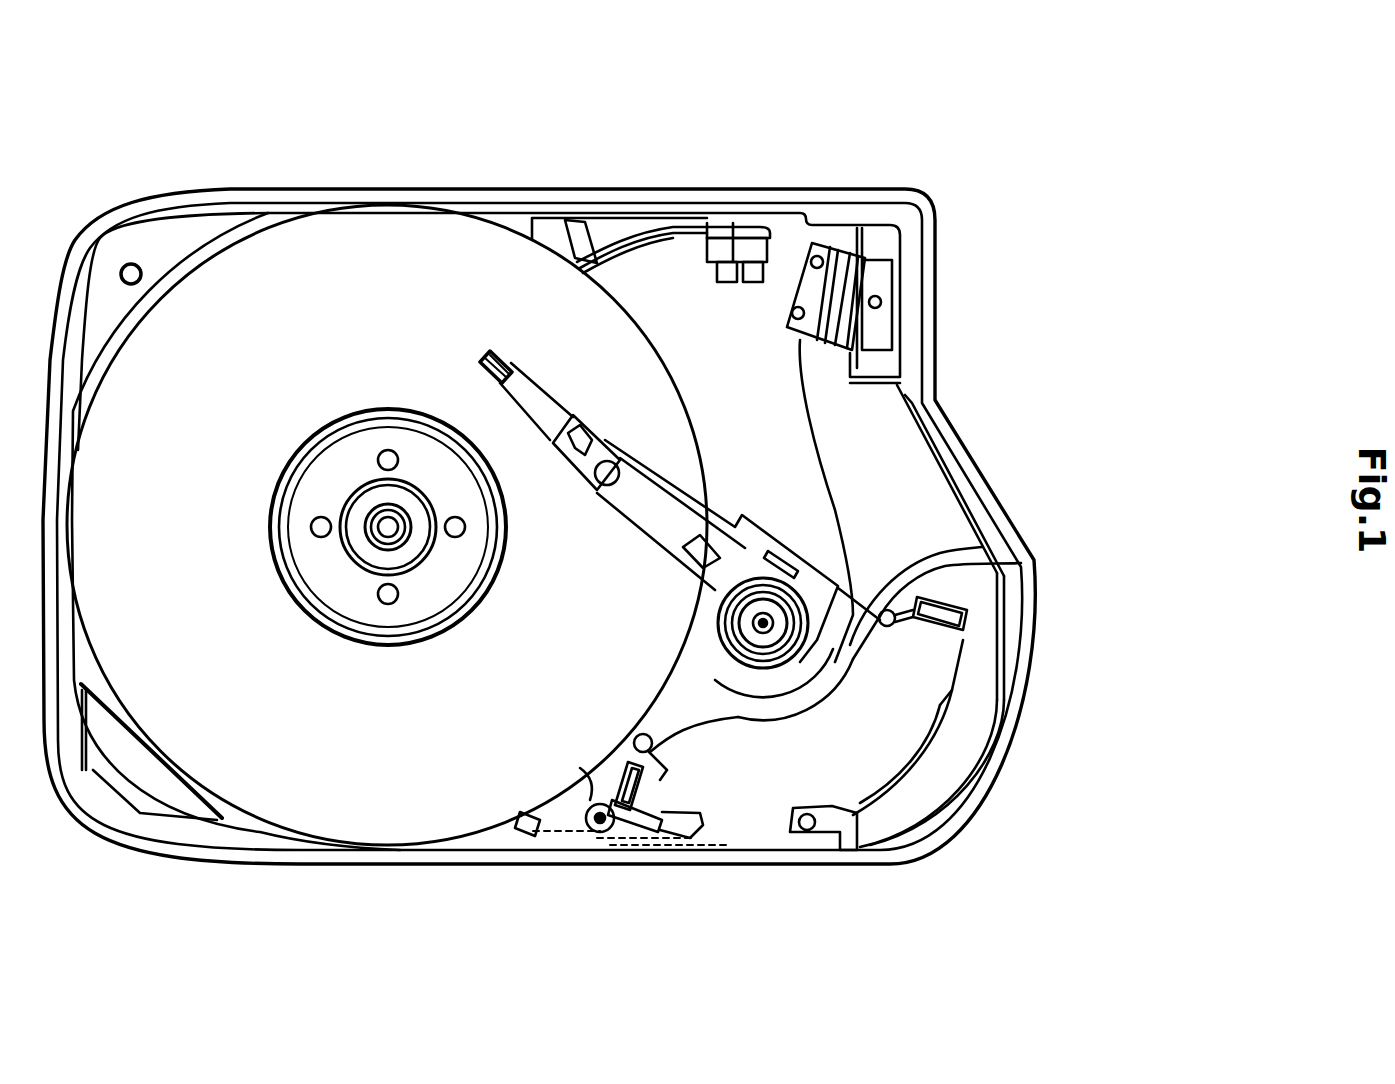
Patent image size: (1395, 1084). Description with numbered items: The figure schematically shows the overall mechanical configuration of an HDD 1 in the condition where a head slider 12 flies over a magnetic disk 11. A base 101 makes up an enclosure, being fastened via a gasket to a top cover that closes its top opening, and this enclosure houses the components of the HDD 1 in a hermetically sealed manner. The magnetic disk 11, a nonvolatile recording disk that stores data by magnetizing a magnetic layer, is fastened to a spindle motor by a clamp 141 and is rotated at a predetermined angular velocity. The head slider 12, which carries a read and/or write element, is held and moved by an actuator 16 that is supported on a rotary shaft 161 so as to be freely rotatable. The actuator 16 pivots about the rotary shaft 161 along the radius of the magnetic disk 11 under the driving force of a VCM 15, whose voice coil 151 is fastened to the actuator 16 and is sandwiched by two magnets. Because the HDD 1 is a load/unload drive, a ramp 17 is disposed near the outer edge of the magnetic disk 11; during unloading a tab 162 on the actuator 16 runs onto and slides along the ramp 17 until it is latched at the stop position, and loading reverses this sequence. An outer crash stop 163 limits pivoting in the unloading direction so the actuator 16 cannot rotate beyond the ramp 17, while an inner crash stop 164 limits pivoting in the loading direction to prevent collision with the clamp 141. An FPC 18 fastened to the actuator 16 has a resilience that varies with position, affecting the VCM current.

The HDD 1 is at (538, 152).
The base 101 is at (936, 257).
The magnetic disk 11 is at (330, 245).
The clamp 141 is at (356, 594).
The head slider 12 is at (485, 378).
The tab 162 is at (483, 352).
The actuator 16 is at (777, 472).
The rotary shaft 161 is at (753, 625).
The ramp 17 is at (733, 238).
The FPC 18 is at (936, 400).
The voice coil 151 is at (982, 548).
The inner crash stop 164 is at (990, 572).
The VCM 15 is at (948, 745).
The outer crash stop 163 is at (576, 793).